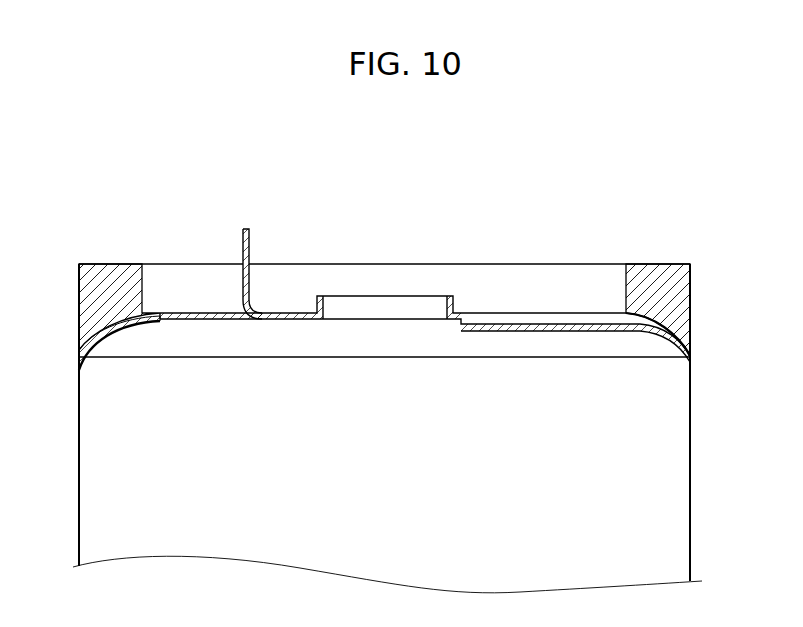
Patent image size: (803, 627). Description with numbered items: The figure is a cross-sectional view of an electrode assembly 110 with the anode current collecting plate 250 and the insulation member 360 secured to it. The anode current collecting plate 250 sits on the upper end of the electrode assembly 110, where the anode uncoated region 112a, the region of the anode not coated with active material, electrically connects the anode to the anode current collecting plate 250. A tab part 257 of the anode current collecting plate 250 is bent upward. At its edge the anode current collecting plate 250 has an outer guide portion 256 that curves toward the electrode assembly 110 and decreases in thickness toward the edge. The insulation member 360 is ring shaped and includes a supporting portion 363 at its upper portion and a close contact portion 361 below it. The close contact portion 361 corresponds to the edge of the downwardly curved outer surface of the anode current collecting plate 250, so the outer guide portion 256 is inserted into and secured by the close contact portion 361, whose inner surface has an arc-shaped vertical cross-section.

The electrode assembly 110 is at (691, 468).
The anode uncoated region 112a is at (583, 350).
The anode current collecting plate 250 is at (295, 312).
The outer guide portion 256 is at (118, 332).
The tab part 257 is at (250, 257).
The insulation member 360 is at (690, 294).
The close contact portion 361 is at (83, 345).
The supporting portion 363 is at (143, 291).